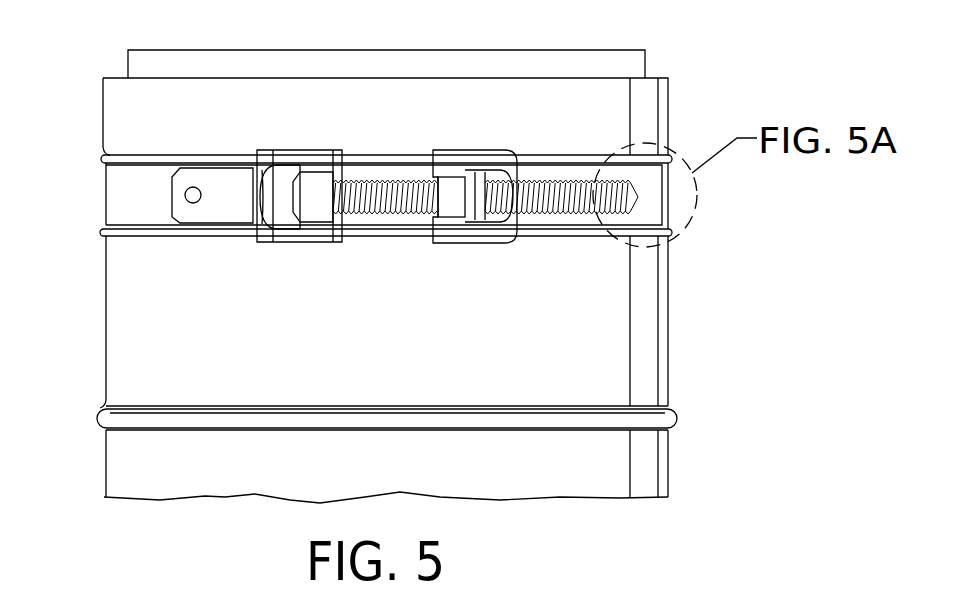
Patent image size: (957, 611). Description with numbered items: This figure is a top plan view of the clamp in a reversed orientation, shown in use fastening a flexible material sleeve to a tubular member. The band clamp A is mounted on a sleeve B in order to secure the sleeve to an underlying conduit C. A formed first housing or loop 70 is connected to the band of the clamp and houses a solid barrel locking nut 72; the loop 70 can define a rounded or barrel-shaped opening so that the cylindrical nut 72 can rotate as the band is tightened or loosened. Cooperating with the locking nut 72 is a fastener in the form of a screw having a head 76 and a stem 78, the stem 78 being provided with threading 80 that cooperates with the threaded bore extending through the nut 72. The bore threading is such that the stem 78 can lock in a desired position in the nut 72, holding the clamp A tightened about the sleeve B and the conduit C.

The first housing or loop 70 is at (452, 165).
The barrel locking nut 72 is at (462, 198).
The head 76 is at (317, 192).
The stem 78 is at (387, 202).
The threading 80 is at (538, 199).
The band clamp A is at (194, 237).
The sleeve B is at (102, 102).
The conduit C is at (648, 57).